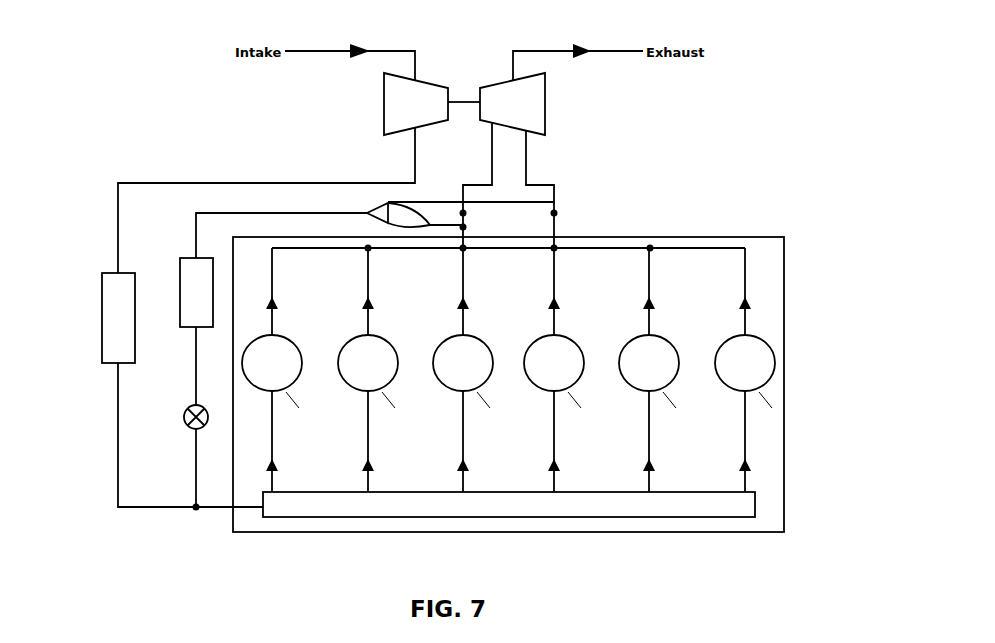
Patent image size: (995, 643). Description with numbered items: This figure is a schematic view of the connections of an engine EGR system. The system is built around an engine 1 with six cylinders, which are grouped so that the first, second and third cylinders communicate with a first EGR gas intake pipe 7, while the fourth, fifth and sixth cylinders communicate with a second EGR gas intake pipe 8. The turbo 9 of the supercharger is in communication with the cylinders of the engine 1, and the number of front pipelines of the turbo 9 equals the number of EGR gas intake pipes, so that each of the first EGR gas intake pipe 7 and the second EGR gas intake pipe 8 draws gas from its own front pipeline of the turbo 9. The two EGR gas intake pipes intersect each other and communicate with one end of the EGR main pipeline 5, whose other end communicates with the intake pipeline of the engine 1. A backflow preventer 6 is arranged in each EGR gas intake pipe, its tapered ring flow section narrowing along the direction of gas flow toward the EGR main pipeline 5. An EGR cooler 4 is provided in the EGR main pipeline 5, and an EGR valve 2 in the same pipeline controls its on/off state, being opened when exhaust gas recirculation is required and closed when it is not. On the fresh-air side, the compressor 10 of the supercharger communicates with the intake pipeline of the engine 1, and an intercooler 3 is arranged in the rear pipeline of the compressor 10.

The engine 1 is at (785, 323).
The EGR valve 2 is at (184, 418).
The intercooler 3 is at (118, 315).
The EGR cooler 4 is at (190, 272).
The EGR main pipeline 5 is at (257, 213).
The backflow preventer 6 is at (388, 203).
The first EGR gas intake pipe 7 is at (430, 226).
The second EGR gas intake pipe 8 is at (515, 202).
The turbo 9 is at (530, 103).
The compressor 10 is at (393, 103).